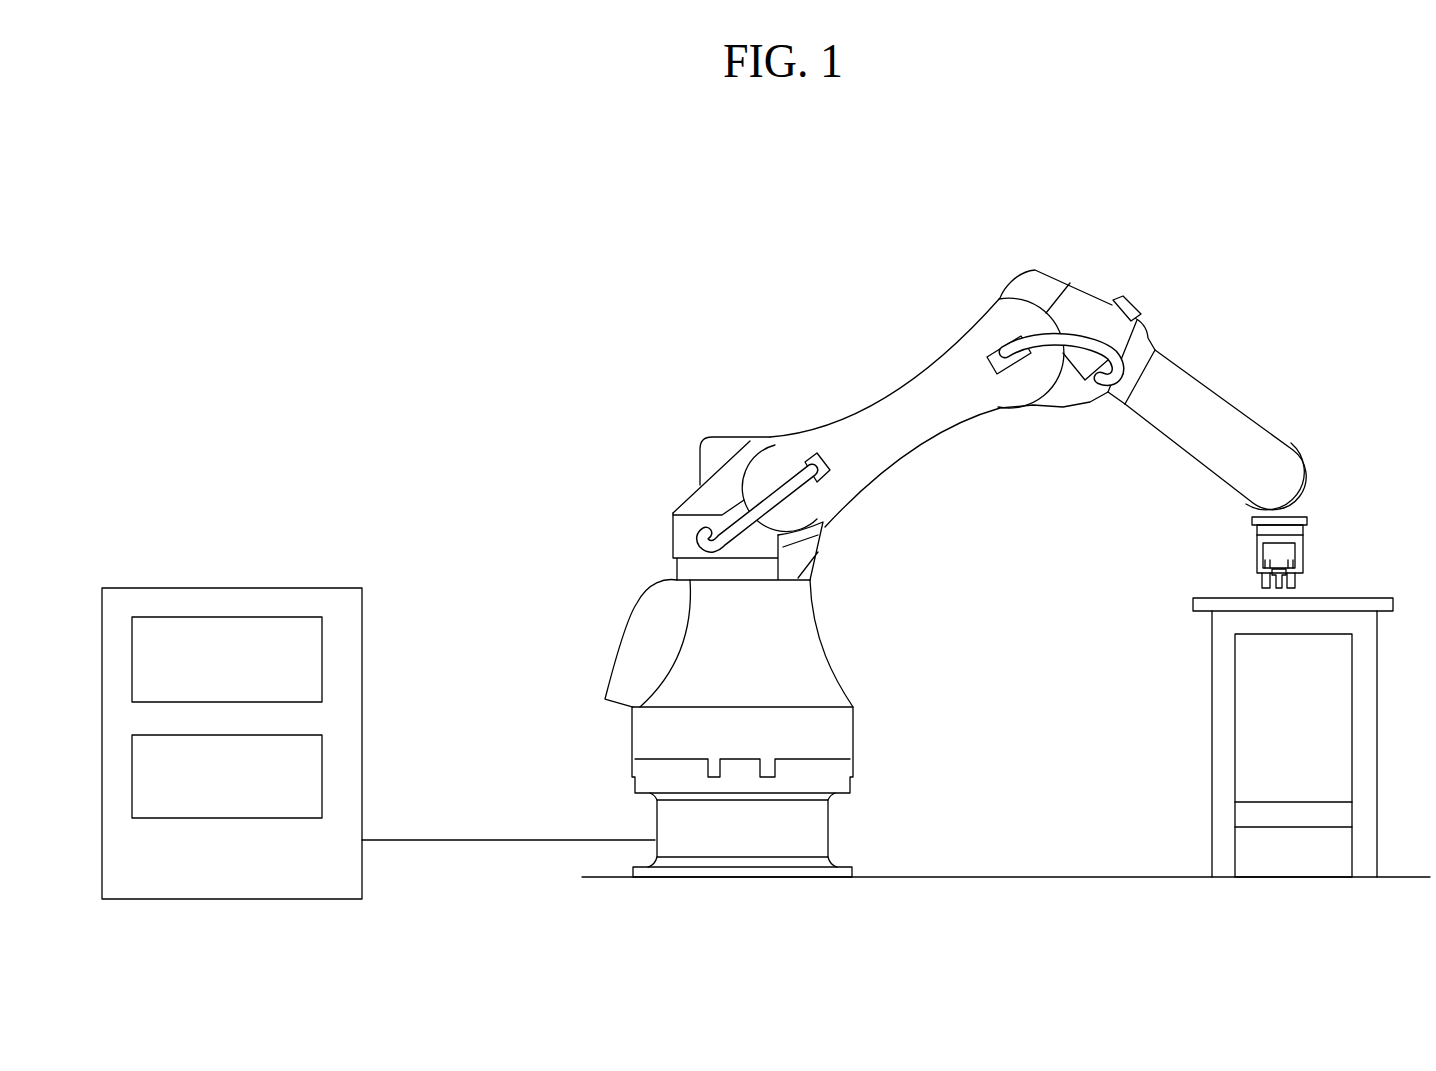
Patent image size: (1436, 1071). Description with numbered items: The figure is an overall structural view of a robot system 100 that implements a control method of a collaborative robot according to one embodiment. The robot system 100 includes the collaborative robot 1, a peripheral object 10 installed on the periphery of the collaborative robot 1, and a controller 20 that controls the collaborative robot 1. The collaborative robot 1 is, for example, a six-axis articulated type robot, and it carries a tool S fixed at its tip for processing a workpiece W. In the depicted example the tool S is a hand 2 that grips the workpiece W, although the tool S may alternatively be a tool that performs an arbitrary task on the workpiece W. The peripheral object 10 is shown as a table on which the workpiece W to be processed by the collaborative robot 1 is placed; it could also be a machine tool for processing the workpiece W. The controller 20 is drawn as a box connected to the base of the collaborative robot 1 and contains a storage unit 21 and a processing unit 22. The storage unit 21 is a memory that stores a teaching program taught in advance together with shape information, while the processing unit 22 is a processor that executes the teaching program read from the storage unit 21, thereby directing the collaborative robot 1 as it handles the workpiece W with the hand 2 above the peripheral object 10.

The robot system 100 is at (512, 258).
The collaborative robot 1 is at (882, 372).
The hand 2 is at (1322, 516).
The tool S is at (1257, 548).
The workpiece W is at (1297, 580).
The peripheral object 10 is at (1196, 732).
The controller 20 is at (230, 572).
The storage unit 21 is at (322, 665).
The processing unit 22 is at (322, 788).